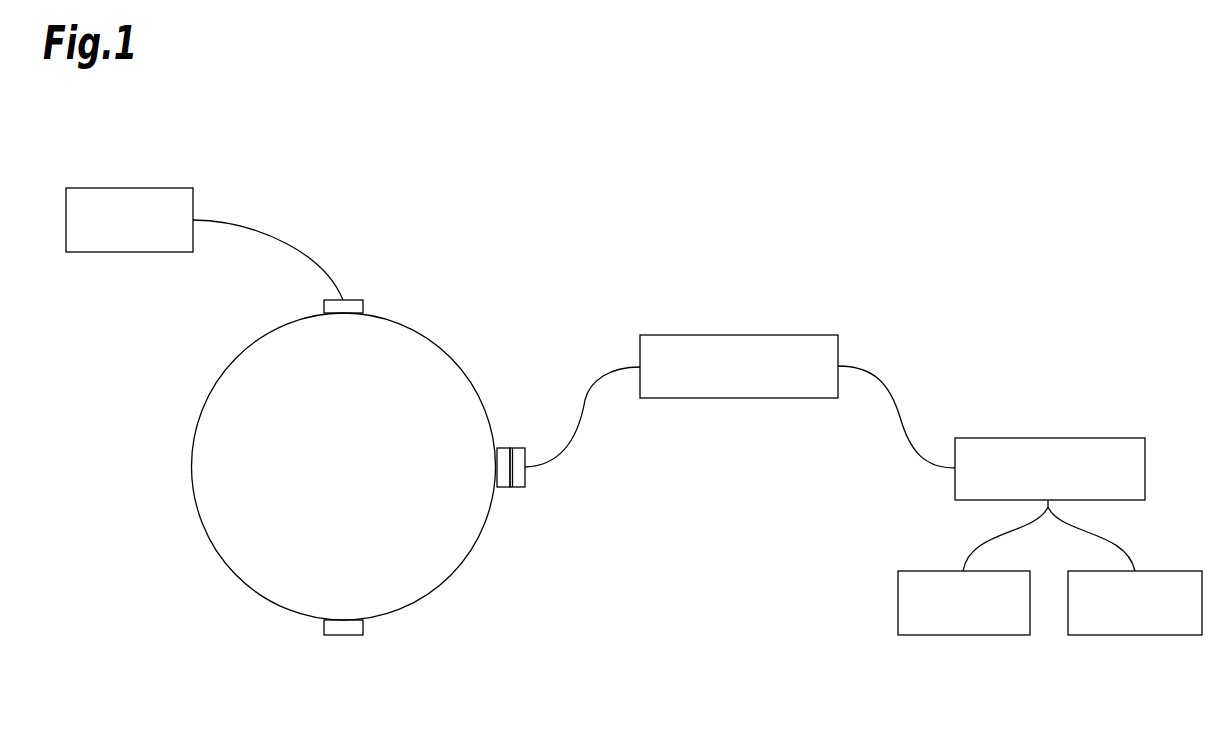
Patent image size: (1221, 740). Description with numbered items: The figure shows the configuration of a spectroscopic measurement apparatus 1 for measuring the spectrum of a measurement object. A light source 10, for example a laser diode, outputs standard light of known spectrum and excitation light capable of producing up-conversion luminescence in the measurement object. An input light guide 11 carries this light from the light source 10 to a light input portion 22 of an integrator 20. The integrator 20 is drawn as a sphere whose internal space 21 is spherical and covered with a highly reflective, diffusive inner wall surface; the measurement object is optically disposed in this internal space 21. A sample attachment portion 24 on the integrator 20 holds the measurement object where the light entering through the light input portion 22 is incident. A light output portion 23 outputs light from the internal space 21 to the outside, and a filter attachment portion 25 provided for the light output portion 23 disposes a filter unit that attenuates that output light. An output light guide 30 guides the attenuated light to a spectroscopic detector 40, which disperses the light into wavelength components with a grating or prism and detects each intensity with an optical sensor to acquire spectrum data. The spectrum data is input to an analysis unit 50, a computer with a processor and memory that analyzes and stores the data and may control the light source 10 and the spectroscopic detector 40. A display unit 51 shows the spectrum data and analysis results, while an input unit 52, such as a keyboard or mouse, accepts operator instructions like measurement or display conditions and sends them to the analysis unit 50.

The spectroscopic measurement apparatus 1 is at (921, 200).
The light source 10 is at (134, 188).
The input light guide 11 is at (257, 228).
The integrator 20 is at (203, 400).
The internal space 21 is at (222, 460).
The light input portion 22 is at (349, 300).
The light output portion 23 is at (502, 487).
The sample attachment portion 24 is at (343, 635).
The filter attachment portion 25 is at (517, 487).
The output light guide 30 is at (600, 378).
The spectroscopic detector 40 is at (740, 335).
The analysis unit 50 is at (1055, 438).
The display unit 51 is at (963, 635).
The input unit 52 is at (1134, 635).